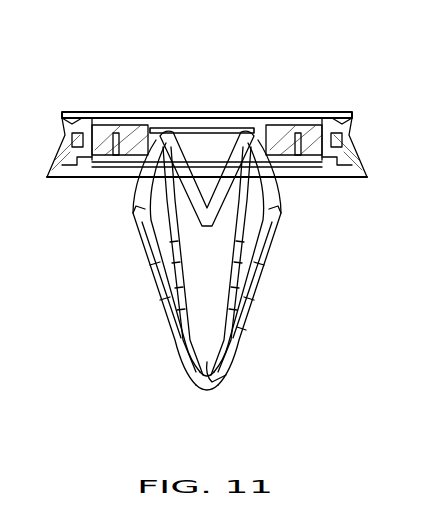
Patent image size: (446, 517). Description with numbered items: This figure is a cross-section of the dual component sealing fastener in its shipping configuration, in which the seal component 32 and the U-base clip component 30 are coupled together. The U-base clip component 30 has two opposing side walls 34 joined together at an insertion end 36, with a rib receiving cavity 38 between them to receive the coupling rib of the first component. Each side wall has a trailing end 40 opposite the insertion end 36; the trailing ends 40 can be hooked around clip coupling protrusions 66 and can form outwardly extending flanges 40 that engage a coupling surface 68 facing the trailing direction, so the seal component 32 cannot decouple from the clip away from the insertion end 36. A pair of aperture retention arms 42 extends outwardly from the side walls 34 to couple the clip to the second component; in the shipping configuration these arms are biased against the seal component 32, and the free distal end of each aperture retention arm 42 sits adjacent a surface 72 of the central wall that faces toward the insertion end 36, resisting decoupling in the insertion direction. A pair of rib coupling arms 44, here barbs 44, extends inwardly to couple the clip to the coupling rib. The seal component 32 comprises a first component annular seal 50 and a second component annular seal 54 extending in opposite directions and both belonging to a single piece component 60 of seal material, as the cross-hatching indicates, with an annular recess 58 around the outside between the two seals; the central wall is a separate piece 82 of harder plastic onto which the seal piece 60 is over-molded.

The U-base clip component 30 is at (226, 410).
The seal component 32 is at (243, 68).
The opposing side walls 34 is at (170, 272).
The insertion end 36 is at (208, 388).
The rib receiving cavity 38 is at (220, 382).
The trailing end 40 is at (77, 125).
The aperture retention arms 42 is at (137, 217).
The rib coupling arms 44 is at (168, 242).
The first component annular seal 50 is at (350, 118).
The second component annular seal 54 is at (360, 160).
The annular recess 58 is at (350, 128).
The single piece component 60 is at (326, 120).
The clip coupling protrusions 66 is at (147, 127).
The coupling surface 68 is at (110, 147).
The surface 72 is at (150, 145).
The separate piece 82 is at (300, 143).